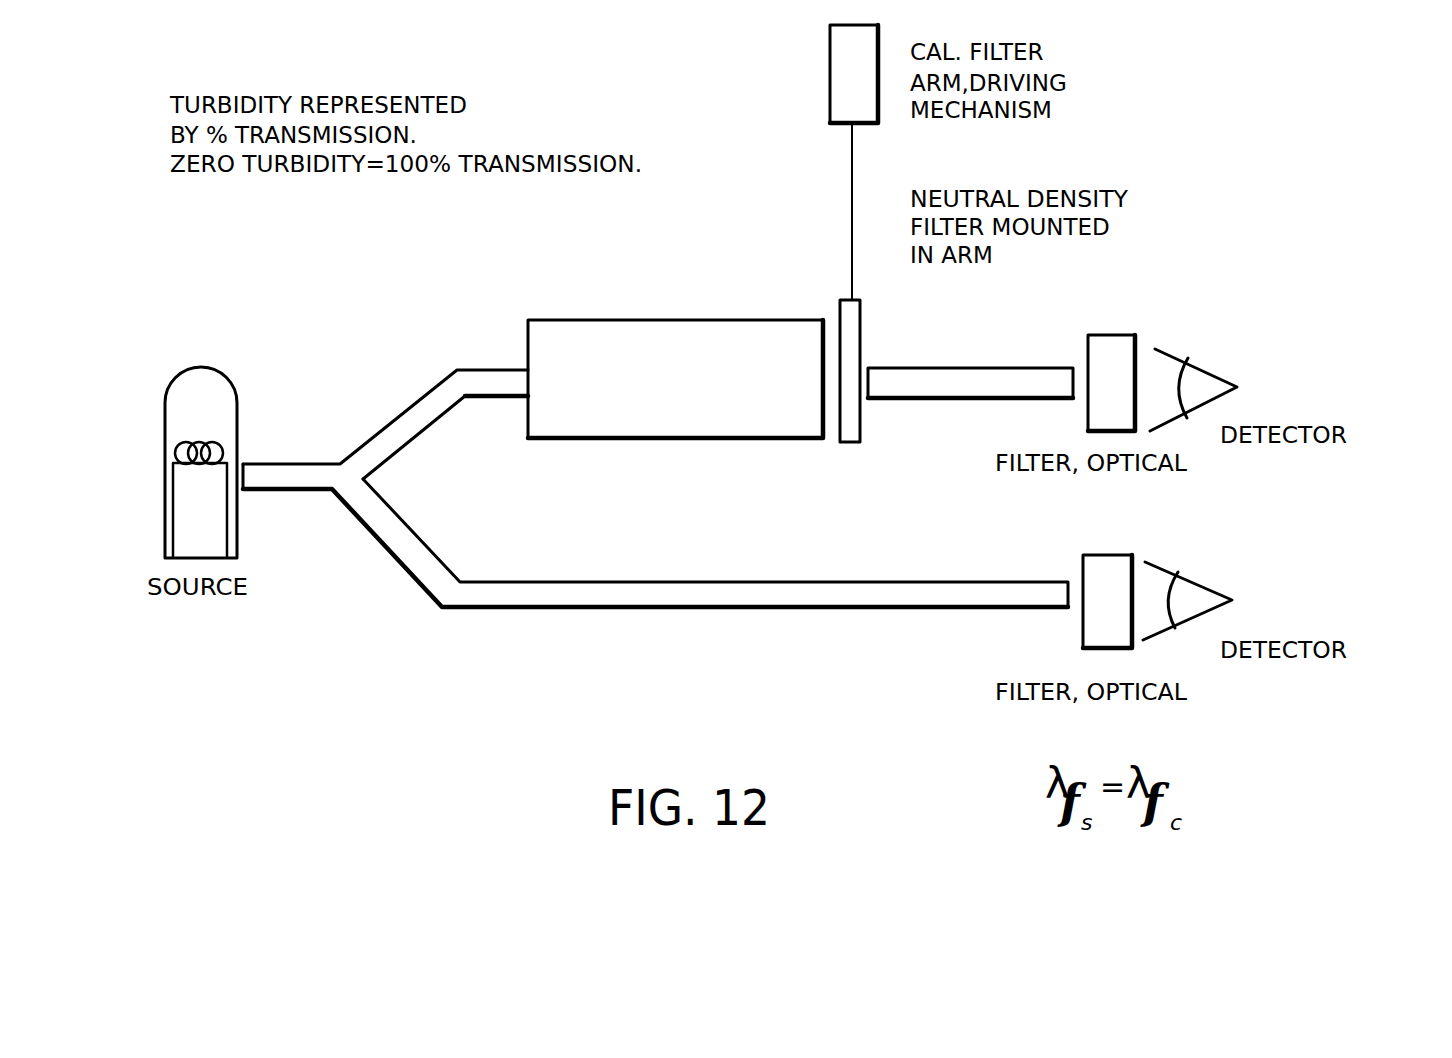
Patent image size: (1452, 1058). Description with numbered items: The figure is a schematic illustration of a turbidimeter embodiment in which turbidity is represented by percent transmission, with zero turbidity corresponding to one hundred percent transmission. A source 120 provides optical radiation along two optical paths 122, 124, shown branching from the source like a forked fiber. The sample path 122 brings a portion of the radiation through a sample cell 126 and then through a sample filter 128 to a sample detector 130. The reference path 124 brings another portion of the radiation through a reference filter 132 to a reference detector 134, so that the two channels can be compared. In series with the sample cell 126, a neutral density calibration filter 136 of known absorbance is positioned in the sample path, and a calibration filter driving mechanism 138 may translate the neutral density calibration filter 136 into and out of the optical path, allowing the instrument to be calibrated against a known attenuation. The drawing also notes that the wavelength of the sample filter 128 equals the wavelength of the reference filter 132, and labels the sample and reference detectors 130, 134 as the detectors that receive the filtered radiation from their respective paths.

The source 120 is at (237, 387).
The optical path 122 is at (423, 388).
The optical path 124 is at (393, 558).
The sample cell 126 is at (630, 320).
The sample filter 128 is at (1133, 335).
The sample detector 130 is at (1237, 387).
The reference filter 132 is at (1132, 556).
The reference detector 134 is at (1233, 600).
The neutral density calibration filter 136 is at (862, 335).
The calibration filter driving mechanism 138 is at (830, 55).